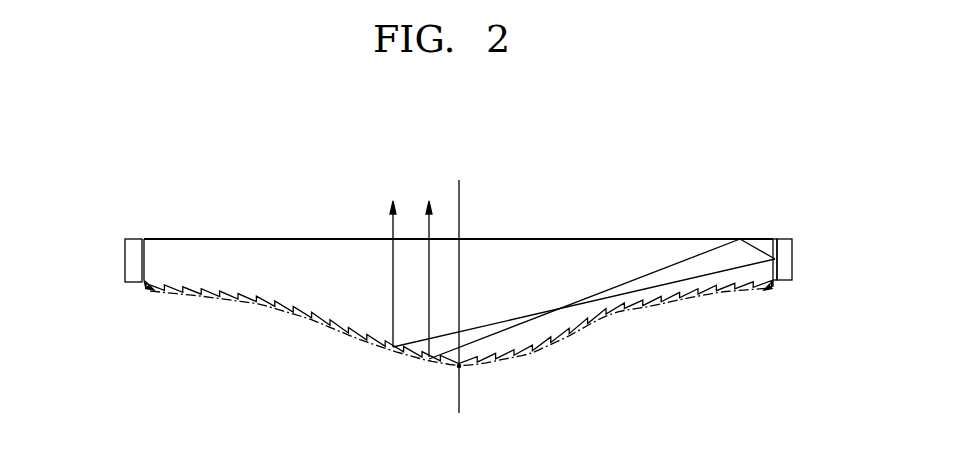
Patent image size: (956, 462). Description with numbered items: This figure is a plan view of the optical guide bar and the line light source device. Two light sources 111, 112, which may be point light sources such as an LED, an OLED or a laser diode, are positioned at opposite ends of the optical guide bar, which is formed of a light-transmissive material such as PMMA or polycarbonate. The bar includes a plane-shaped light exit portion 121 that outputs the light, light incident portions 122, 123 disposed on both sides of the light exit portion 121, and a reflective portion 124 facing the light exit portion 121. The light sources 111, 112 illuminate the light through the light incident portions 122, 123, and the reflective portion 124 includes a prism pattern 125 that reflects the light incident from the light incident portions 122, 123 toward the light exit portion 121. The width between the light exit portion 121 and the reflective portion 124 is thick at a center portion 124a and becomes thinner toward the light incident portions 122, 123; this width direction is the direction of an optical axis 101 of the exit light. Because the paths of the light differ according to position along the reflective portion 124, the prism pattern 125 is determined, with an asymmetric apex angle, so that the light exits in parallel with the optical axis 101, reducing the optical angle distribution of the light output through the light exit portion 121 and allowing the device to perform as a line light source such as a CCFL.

The optical axis 101 is at (458, 397).
The light source 111 is at (792, 253).
The light source 112 is at (125, 260).
The light exit portion 121 is at (244, 238).
The light incident portion 122 is at (773, 255).
The light incident portion 123 is at (146, 257).
The reflective portion 124 is at (310, 320).
The center portion 124a is at (461, 368).
The prism pattern 125 is at (358, 338).